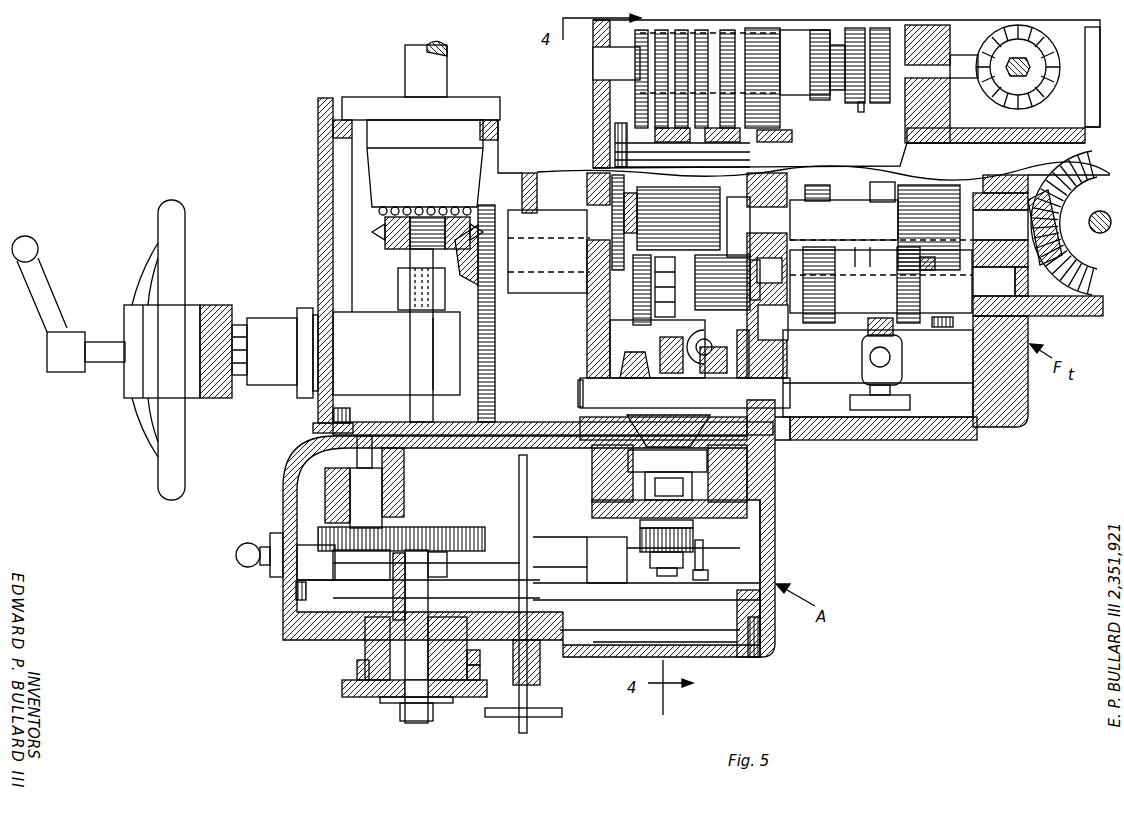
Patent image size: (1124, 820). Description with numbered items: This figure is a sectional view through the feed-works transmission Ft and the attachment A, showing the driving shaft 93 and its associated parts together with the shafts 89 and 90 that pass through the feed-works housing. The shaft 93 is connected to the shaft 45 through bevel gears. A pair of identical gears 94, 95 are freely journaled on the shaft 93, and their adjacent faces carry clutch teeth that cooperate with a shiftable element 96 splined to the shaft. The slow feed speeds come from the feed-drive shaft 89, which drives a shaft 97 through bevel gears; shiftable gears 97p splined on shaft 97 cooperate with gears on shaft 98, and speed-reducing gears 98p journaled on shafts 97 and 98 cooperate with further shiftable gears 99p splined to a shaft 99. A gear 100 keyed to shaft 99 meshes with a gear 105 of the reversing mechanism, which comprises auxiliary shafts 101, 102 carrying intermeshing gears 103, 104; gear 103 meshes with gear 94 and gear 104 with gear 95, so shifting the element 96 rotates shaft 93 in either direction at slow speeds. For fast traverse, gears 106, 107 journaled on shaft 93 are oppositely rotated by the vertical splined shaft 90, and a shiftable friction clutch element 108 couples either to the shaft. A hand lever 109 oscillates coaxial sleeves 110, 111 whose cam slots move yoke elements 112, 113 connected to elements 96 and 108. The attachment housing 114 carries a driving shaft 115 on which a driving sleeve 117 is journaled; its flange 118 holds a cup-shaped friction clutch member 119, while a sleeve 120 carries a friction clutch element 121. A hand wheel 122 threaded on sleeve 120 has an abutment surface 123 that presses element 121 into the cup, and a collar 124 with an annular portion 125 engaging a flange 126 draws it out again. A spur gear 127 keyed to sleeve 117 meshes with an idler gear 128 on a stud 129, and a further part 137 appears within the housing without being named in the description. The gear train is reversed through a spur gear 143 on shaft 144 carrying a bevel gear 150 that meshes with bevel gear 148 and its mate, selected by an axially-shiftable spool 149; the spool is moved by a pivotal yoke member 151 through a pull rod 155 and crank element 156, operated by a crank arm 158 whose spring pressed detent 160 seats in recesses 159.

The shaft 45 is at (440, 80).
The feed-drive shaft 89 is at (1024, 82).
The vertically disposed splined shaft 90 is at (1092, 232).
The driving shaft 93 is at (541, 250).
The gear 94 is at (636, 302).
The gear 95 is at (739, 227).
The shiftable element 96 is at (666, 312).
The shaft 97 is at (832, 98).
The shiftable gears 97p is at (862, 116).
The shaft 98 is at (598, 62).
The speed-reducing gears 98p is at (707, 67).
The shaft 99 is at (603, 155).
The shiftable gears 99p is at (640, 130).
The gear 100 is at (612, 133).
The auxiliary shaft 101 is at (637, 220).
The auxiliary shaft 102 is at (878, 373).
The gear 103 is at (700, 190).
The gear 104 is at (745, 292).
The gear 105 is at (608, 212).
The gear 106 is at (832, 200).
The gear 107 is at (942, 328).
The shiftable friction clutch element 108 is at (884, 272).
The hand lever 109 is at (42, 292).
The coaxial sleeve 110 is at (608, 335).
The coaxial sleeve 111 is at (818, 368).
The yoke element 112 is at (700, 336).
The yoke element 113 is at (892, 336).
The housing 114 is at (766, 558).
The driving shaft 115 is at (440, 574).
The driving sleeve 117 is at (398, 596).
The flange 118 is at (428, 612).
The cup-shaped friction clutch member 119 is at (365, 643).
The sleeve 120 is at (437, 703).
The friction clutch element 121 is at (635, 362).
The hand wheel 122 is at (345, 697).
The abutment surface 123 is at (385, 700).
The collar 124 is at (472, 668).
The annular portion 125 is at (785, 378).
The flange 126 is at (586, 396).
The spur gear 127 is at (478, 526).
The idler gear 128 is at (318, 540).
The stud 129 is at (358, 493).
The block 137 is at (563, 557).
The spur gear 143 is at (697, 540).
The shaft 144 is at (665, 578).
The bevel gear 148 is at (712, 378).
The axially-shiftable spool 149 is at (668, 380).
The bevel gear 150 is at (667, 475).
The pivotal yoke member 151 is at (662, 362).
The pull rod 155 is at (704, 552).
The crank element 156 is at (708, 575).
The crank arm 158 is at (236, 550).
The recesses 159 is at (280, 553).
The spring pressed detent 160 is at (275, 580).